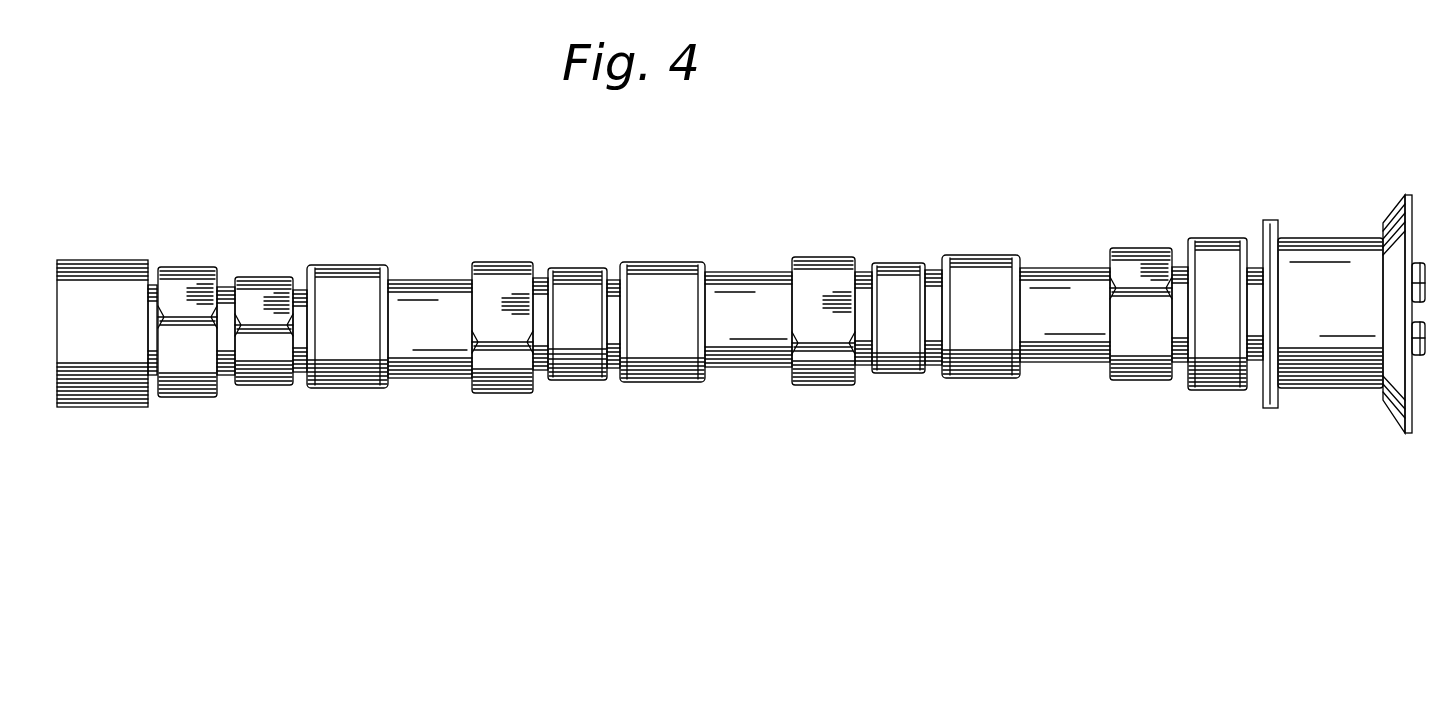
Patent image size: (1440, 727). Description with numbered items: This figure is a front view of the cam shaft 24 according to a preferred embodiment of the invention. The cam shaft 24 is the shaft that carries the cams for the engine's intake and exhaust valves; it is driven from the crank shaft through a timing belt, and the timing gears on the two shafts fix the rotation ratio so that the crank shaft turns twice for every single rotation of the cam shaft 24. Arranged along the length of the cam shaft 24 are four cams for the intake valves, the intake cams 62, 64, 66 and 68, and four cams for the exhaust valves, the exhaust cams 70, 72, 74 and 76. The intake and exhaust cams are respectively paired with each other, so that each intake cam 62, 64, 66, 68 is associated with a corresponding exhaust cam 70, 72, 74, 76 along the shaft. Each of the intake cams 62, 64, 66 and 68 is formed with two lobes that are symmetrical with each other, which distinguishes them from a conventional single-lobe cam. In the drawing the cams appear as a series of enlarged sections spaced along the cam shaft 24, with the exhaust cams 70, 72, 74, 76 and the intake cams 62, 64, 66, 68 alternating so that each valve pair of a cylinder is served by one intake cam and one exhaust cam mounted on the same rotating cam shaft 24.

The cam shaft 24 is at (430, 258).
The intake cam 62 is at (1215, 248).
The intake cam 64 is at (905, 372).
The intake cam 66 is at (580, 370).
The intake cam 68 is at (270, 277).
The exhaust cam 70 is at (1127, 258).
The exhaust cam 72 is at (818, 377).
The exhaust cam 74 is at (498, 382).
The exhaust cam 76 is at (186, 268).